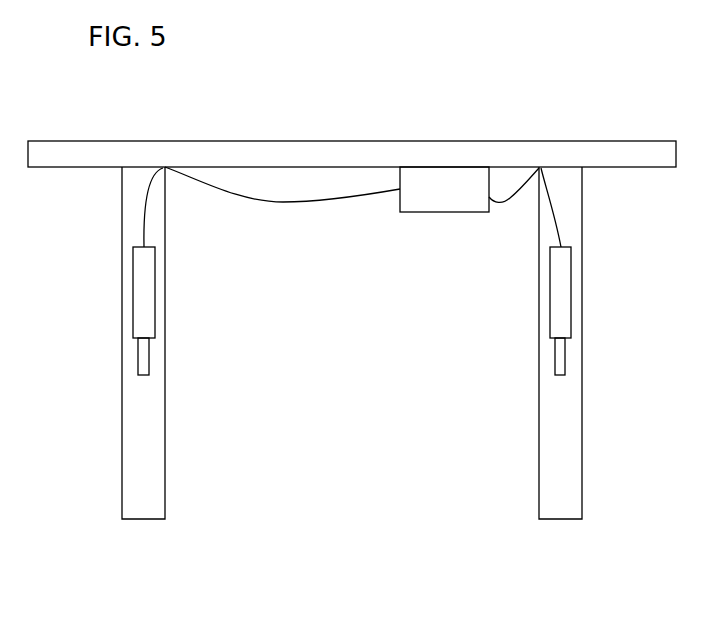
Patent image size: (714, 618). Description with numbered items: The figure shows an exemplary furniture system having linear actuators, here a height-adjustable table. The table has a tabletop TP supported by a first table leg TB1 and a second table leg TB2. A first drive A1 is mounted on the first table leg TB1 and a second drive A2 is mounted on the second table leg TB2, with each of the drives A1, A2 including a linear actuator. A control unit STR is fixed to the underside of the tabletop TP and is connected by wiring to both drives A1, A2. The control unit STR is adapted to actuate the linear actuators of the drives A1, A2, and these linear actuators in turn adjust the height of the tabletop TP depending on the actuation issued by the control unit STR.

The tabletop TP is at (303, 150).
The first table leg TB1 is at (155, 476).
The second table leg TB2 is at (555, 490).
The first drive A1 is at (147, 298).
The second drive A2 is at (558, 318).
The control unit STR is at (352, 189).